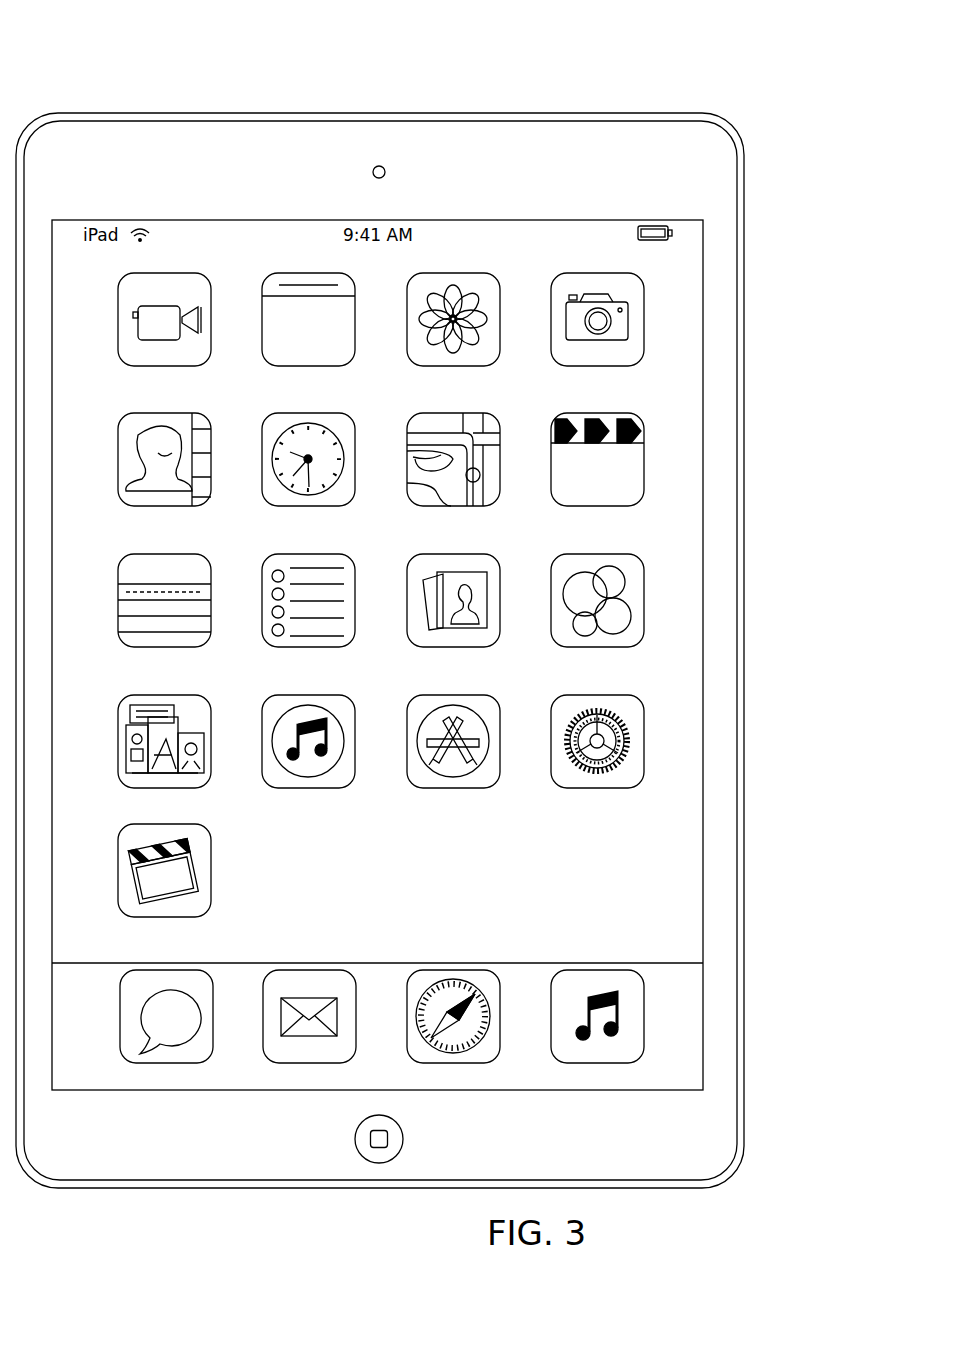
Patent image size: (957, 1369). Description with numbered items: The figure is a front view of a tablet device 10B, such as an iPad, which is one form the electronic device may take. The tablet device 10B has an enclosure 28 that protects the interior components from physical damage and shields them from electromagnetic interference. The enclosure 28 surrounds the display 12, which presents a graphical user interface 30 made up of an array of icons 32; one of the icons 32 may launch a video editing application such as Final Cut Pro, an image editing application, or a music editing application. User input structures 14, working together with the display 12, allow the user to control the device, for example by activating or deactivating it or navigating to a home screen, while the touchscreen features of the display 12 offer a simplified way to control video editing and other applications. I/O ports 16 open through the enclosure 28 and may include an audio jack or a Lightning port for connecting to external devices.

The tablet device 10B is at (133, 46).
The display 12 is at (704, 875).
The user input structures 14 is at (640, 116).
The I/O ports 16 is at (118, 116).
The enclosure 28 is at (745, 614).
The graphical user interface 30 is at (672, 810).
The icons 32 is at (645, 713).